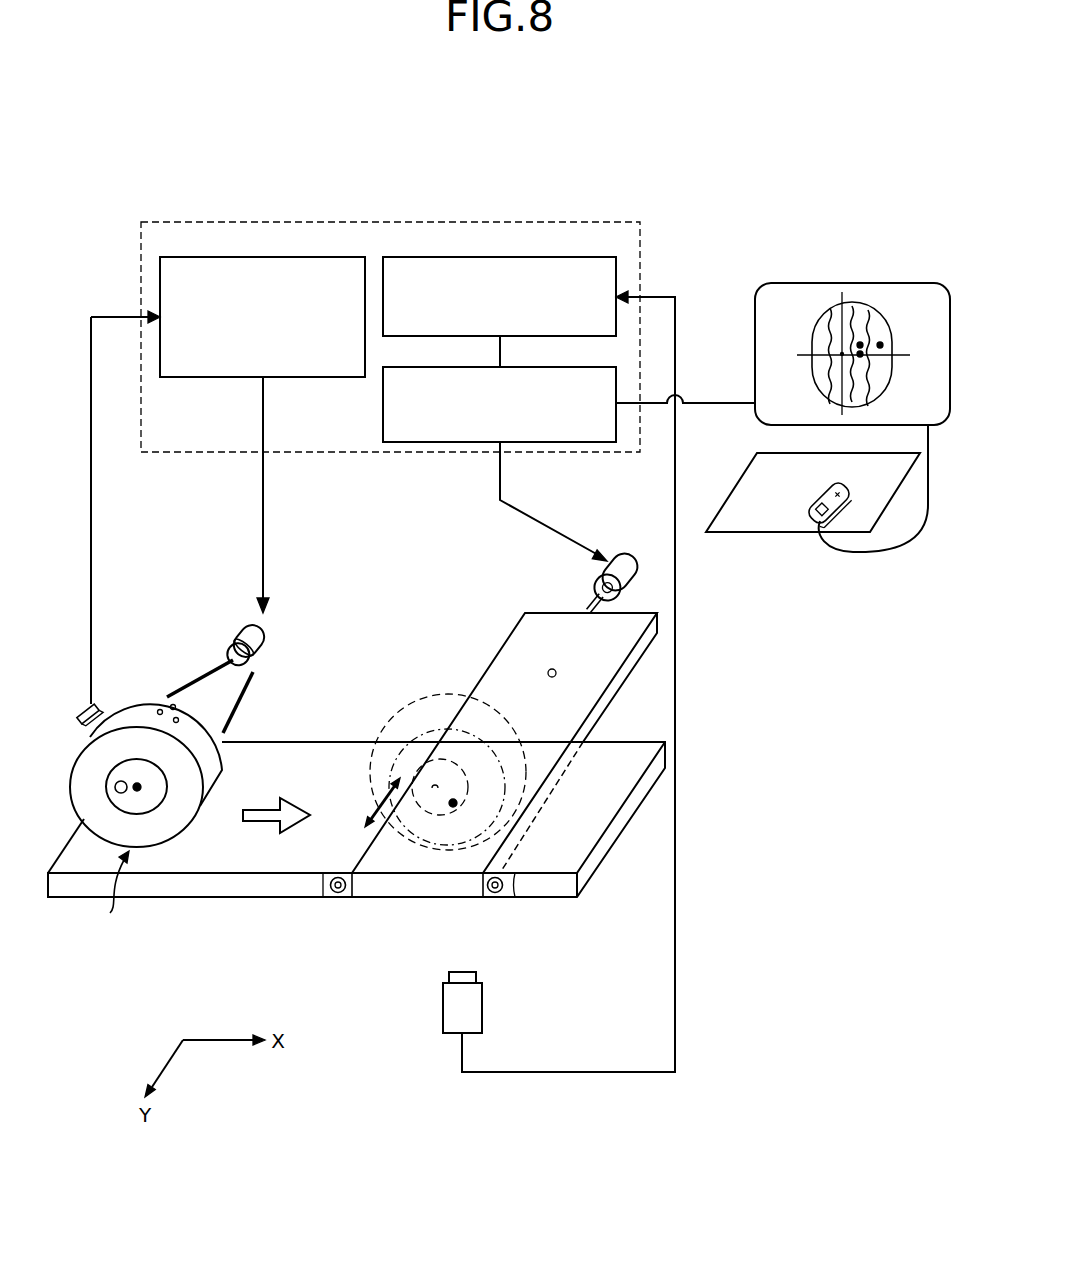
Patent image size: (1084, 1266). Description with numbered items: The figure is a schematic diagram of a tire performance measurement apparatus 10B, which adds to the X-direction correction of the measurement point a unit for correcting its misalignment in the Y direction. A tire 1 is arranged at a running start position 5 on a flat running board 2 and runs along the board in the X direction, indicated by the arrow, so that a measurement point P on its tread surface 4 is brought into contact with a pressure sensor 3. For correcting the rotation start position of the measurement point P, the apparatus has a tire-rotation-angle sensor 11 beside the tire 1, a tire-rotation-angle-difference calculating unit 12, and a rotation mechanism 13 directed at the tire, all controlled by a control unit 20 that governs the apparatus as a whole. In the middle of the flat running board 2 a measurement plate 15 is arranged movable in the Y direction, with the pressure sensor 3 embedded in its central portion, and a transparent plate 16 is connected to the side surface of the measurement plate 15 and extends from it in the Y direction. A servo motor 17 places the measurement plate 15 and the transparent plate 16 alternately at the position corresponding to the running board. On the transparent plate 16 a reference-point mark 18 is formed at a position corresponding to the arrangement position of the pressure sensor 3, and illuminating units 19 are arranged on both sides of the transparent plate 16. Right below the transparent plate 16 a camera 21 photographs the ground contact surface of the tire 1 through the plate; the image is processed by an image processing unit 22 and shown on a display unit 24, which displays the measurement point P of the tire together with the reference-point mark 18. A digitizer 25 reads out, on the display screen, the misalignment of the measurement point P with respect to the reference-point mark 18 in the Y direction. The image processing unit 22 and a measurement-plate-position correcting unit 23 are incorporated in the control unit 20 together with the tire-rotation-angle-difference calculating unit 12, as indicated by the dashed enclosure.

The tire 1 is at (822, 310).
The flat running board 2 is at (333, 742).
The pressure sensor 3 is at (548, 670).
The tread surface 4 is at (128, 712).
The running start position 5 is at (115, 897).
The tire performance measurement apparatus 10B is at (718, 160).
The tire-rotation-angle sensor 11 is at (78, 712).
The tire-rotation-angle-difference calculating unit 12 is at (318, 257).
The rotation mechanism 13 is at (266, 632).
The measurement plate 15 is at (640, 650).
The transparent plate 16 is at (385, 887).
The servo motor 17 is at (632, 553).
The reference-point mark 18 is at (457, 803).
The illuminating units 19 is at (338, 895).
The control unit 20 is at (548, 222).
The camera 21 is at (484, 1003).
The image processing unit 22 is at (557, 257).
The measurement-plate-position correcting unit 23 is at (557, 367).
The display unit 24 is at (755, 318).
The digitizer 25 is at (812, 492).
The measurement point P is at (880, 343).